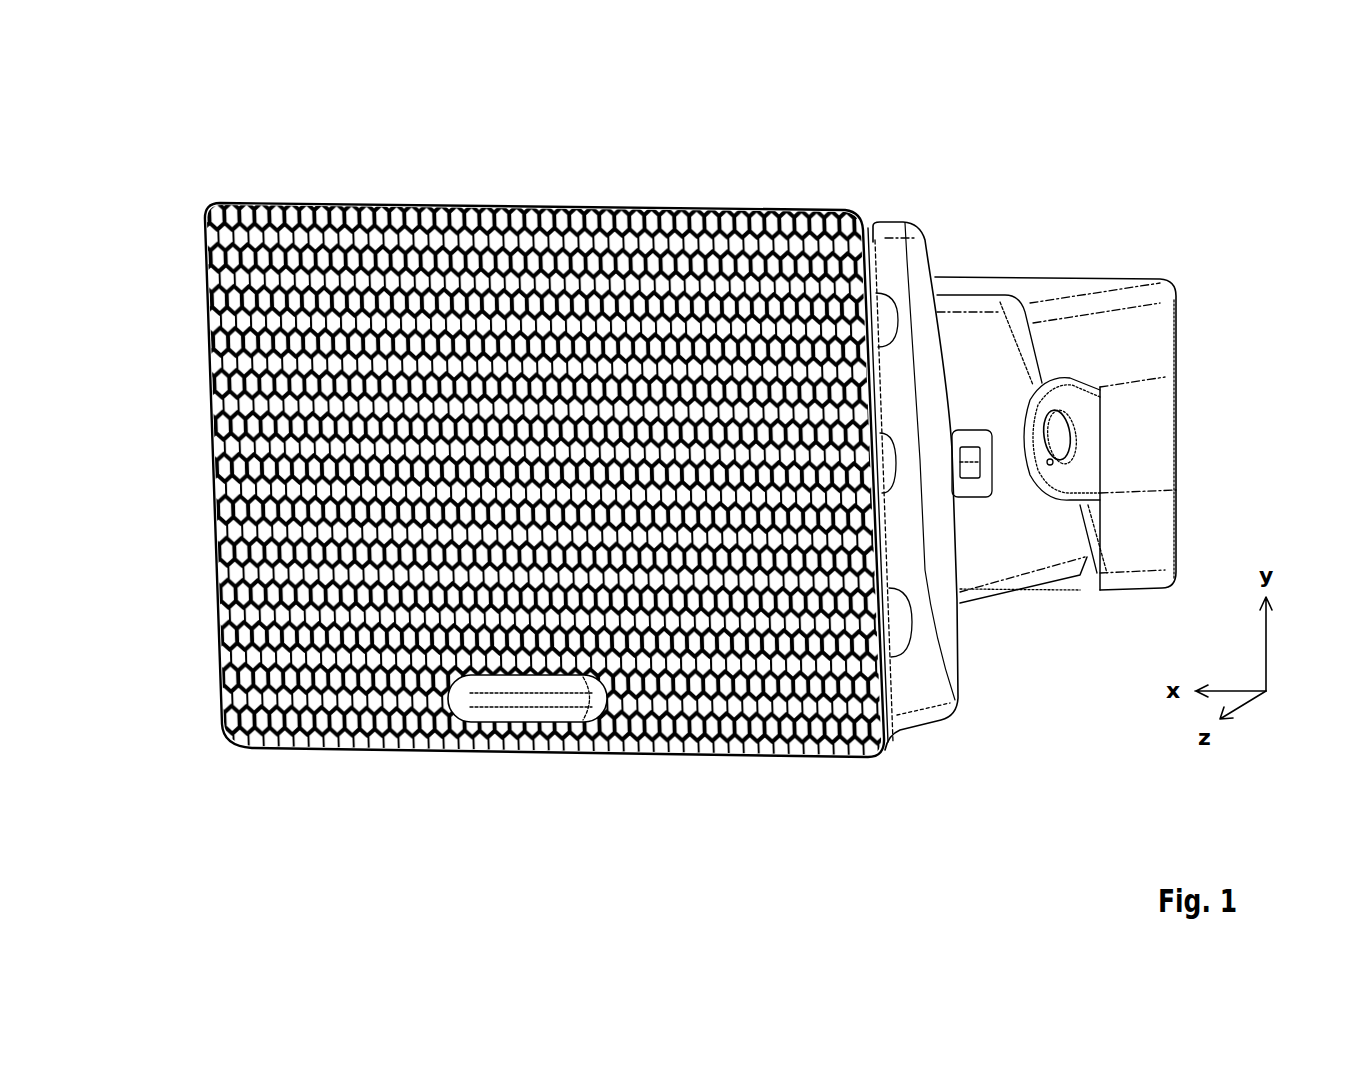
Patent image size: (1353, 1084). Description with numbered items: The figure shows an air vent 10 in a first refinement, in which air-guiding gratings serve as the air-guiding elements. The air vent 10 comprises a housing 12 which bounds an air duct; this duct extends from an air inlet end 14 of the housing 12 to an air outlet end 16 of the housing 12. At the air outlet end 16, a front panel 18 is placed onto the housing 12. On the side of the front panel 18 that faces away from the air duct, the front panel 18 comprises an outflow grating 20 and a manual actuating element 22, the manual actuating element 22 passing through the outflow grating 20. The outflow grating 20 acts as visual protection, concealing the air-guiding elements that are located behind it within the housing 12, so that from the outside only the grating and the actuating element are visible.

The air vent 10 is at (258, 191).
The housing 12 is at (1043, 293).
The air inlet end 14 is at (1184, 413).
The air outlet end 16 is at (354, 448).
The front panel 18 is at (882, 295).
The outflow grating 20 is at (807, 227).
The manual actuating element 22 is at (518, 710).